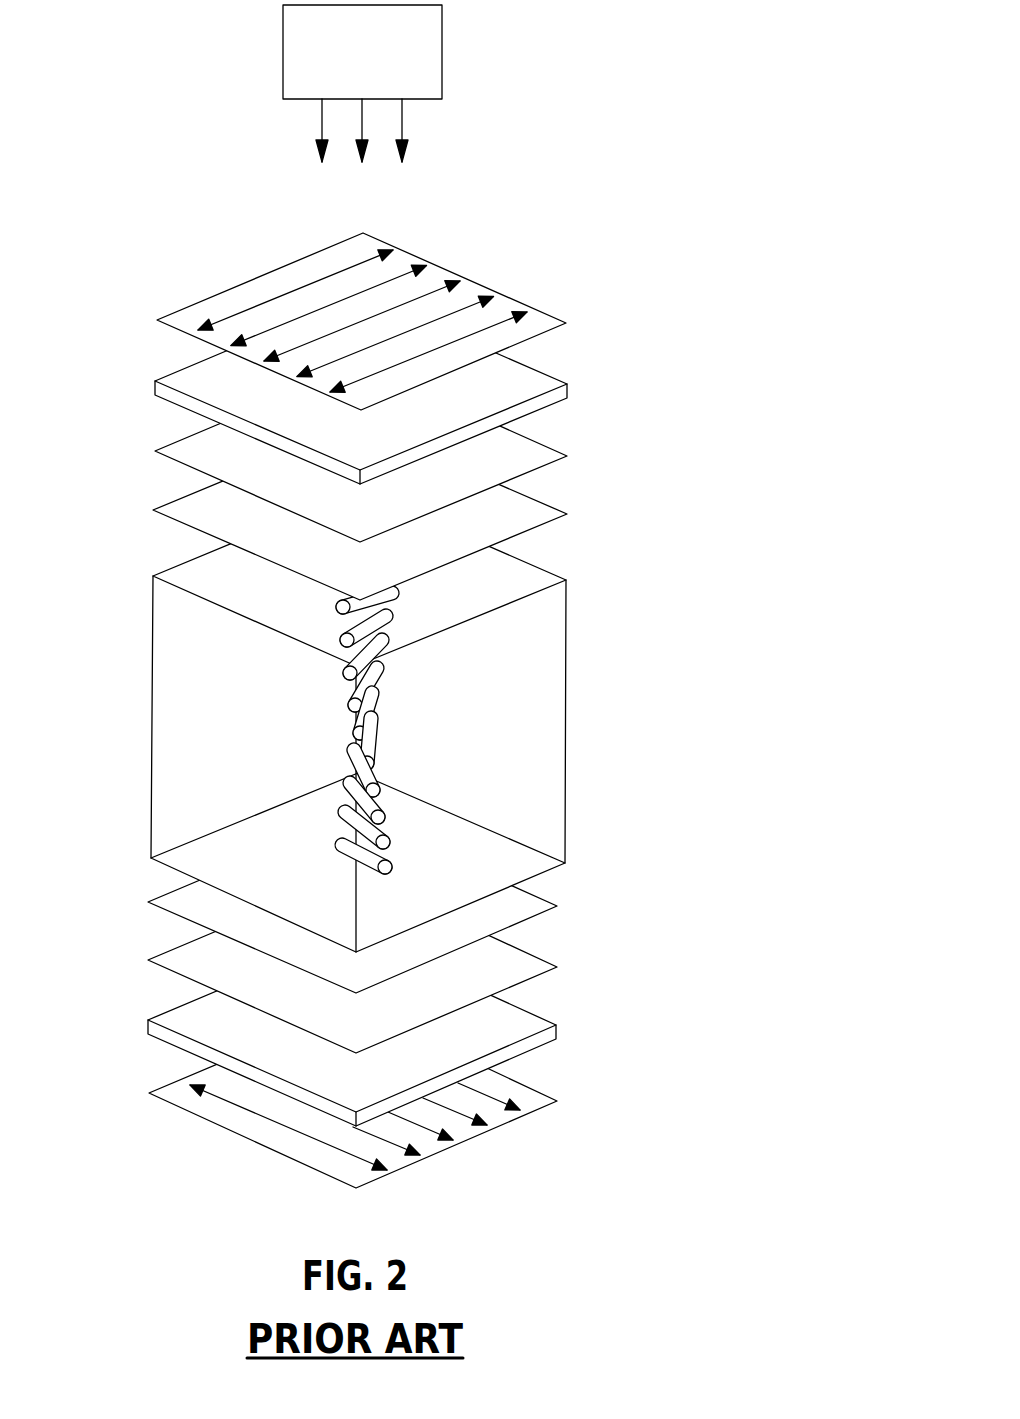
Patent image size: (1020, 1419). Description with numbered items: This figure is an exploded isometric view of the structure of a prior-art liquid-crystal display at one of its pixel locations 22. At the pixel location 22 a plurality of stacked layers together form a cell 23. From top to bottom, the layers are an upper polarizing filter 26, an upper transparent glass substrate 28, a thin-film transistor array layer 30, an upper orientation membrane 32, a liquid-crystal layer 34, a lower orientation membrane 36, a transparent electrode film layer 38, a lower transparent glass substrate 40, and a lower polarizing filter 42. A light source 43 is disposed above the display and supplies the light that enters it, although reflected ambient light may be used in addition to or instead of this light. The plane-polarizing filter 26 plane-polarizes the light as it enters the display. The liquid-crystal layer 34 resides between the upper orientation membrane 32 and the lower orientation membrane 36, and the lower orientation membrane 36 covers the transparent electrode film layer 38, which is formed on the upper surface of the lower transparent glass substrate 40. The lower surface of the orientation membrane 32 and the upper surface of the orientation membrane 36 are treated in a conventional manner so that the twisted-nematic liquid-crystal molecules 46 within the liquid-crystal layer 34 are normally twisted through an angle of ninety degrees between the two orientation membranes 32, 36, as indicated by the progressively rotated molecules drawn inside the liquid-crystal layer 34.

The pixel location 22 is at (540, 1187).
The cell 23 is at (142, 225).
The upper polarizing filter 26 is at (540, 325).
The upper transparent glass substrate 28 is at (542, 383).
The thin-film transistor array layer 30 is at (542, 457).
The upper orientation membrane 32 is at (542, 515).
The liquid-crystal layer 34 is at (533, 693).
The lower orientation membrane 36 is at (537, 909).
The transparent electrode film layer 38 is at (537, 972).
The lower transparent glass substrate 40 is at (537, 1030).
The lower polarizing filter 42 is at (537, 1103).
The light source 43 is at (420, 57).
The twisted-nematic liquid-crystal molecules 46 is at (367, 712).